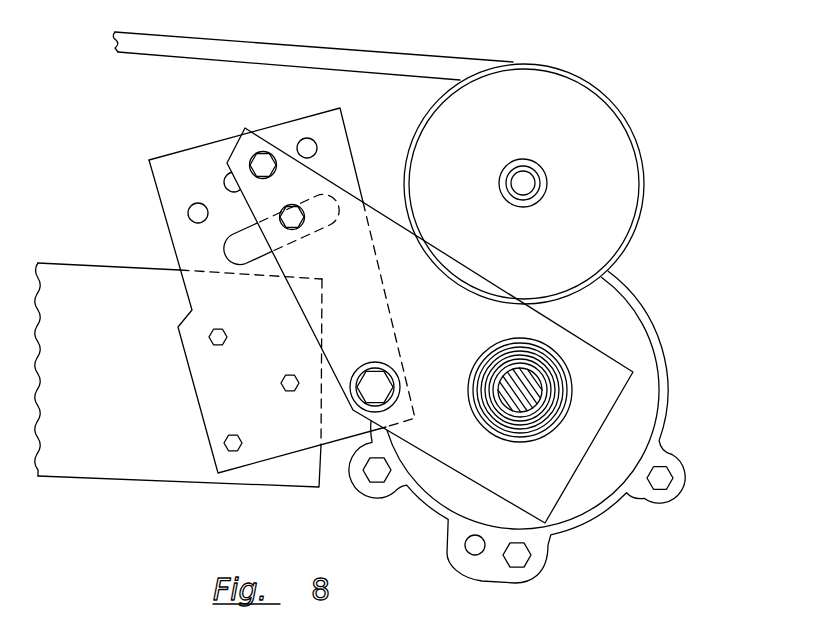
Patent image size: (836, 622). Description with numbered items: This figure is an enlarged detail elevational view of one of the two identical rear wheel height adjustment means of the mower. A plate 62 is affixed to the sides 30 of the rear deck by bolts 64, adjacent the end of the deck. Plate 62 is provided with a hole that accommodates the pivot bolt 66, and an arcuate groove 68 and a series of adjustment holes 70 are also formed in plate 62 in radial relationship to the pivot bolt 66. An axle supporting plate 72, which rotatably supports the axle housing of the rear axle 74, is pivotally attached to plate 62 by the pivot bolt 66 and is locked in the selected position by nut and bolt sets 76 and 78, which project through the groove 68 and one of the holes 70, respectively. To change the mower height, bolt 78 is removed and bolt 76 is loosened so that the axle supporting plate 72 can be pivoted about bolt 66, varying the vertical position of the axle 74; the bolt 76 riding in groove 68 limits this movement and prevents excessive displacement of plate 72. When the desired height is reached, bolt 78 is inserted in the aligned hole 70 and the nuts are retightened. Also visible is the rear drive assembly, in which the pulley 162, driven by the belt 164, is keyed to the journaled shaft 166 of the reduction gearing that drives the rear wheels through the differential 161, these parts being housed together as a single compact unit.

The sides of the rear deck 30 is at (105, 442).
The plate 62 is at (200, 365).
The bolts 64 is at (227, 337).
The pivot bolt 66 is at (367, 398).
The arcuate groove 68 is at (247, 264).
The adjustment holes 70 is at (312, 145).
The axle supporting plate 72 is at (444, 319).
The axle 74 is at (533, 398).
The nut and bolt set 76 is at (297, 228).
The nut and bolt set 78 is at (275, 170).
The differential 161 is at (670, 407).
The pulley 162 is at (597, 104).
The belt 164 is at (387, 53).
The journaled shaft 166 is at (545, 200).